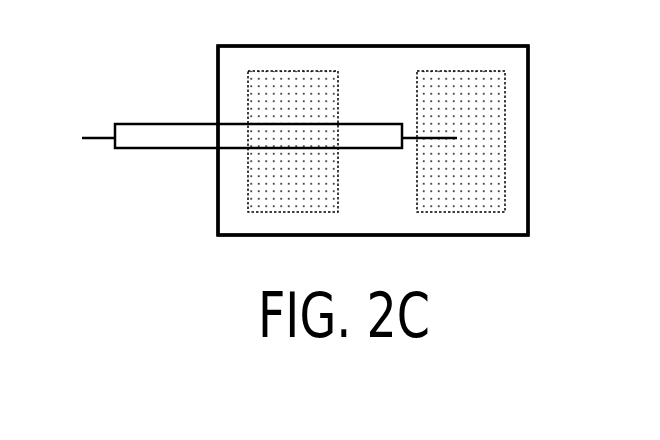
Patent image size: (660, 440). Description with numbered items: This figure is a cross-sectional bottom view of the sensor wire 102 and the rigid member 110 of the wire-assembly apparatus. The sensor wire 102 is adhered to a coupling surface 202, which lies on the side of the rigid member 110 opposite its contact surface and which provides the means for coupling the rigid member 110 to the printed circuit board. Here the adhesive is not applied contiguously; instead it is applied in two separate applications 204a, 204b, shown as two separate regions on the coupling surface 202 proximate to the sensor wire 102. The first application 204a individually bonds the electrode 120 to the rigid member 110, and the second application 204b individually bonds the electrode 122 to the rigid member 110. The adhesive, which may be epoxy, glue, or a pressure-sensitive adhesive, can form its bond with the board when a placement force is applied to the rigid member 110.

The sensor wire 102 is at (150, 104).
The rigid member 110 is at (218, 53).
The coupling surface 202 is at (512, 52).
The adhesive application 204a is at (248, 100).
The adhesive application 204b is at (505, 88).
The electrode 120 is at (163, 149).
The electrode 122 is at (96, 139).